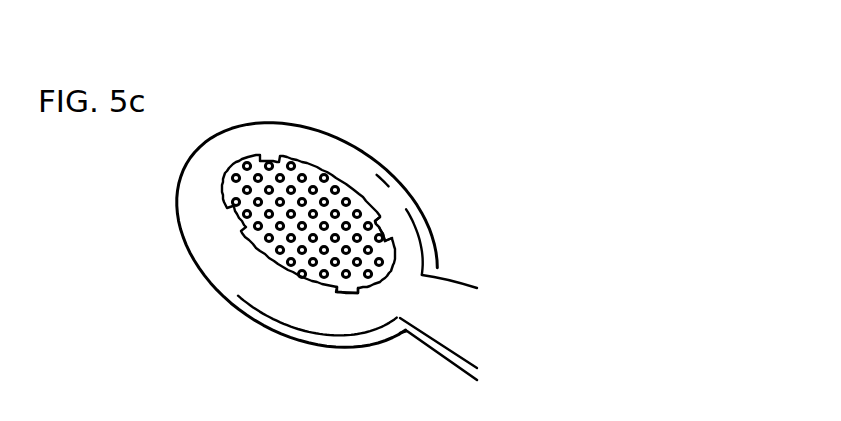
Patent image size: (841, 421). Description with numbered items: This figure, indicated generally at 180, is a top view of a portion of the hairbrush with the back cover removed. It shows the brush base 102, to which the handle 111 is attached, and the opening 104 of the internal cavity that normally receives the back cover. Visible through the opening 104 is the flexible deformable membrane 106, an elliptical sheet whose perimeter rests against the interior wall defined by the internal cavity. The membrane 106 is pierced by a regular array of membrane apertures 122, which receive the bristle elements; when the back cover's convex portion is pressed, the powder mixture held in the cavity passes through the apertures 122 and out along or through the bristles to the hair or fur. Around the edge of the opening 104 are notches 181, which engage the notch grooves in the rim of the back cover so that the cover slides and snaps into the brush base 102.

The brush base 102 is at (327, 143).
The second opening 104 is at (357, 193).
The flexible deformable membrane 106 is at (337, 283).
The handle 111 is at (482, 317).
The membrane apertures 122 is at (273, 240).
The top view of a portion of the brush base with back cover removed 180 is at (605, 122).
The notches 181 is at (377, 222).